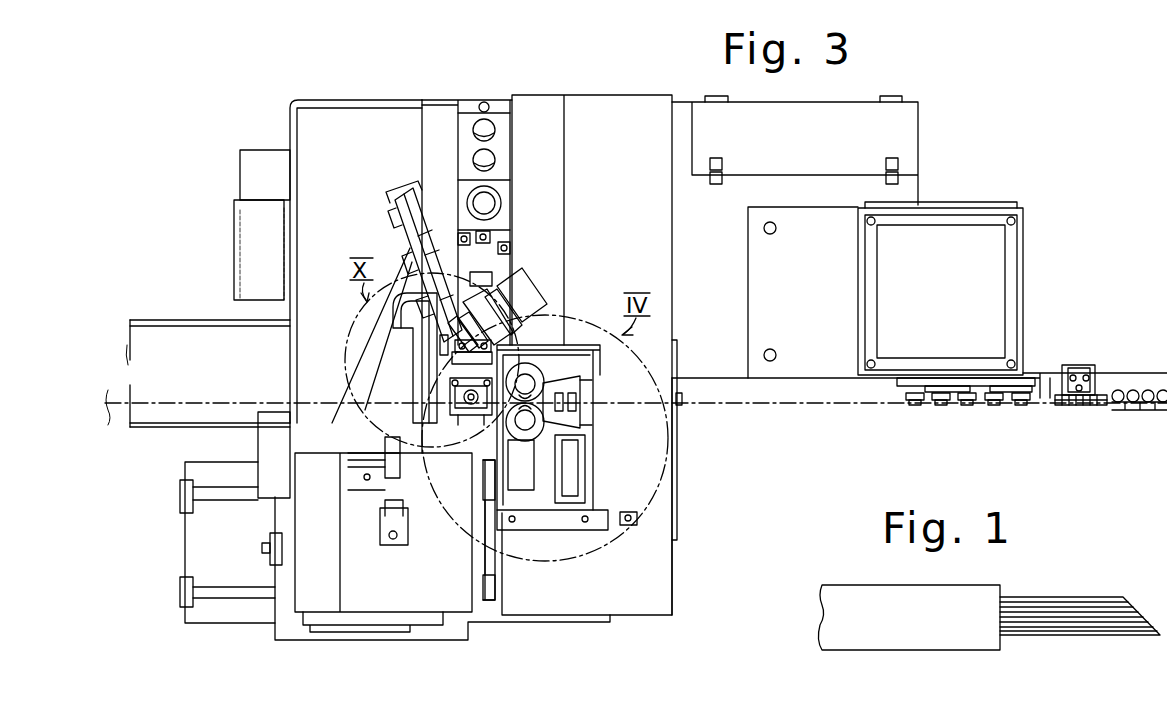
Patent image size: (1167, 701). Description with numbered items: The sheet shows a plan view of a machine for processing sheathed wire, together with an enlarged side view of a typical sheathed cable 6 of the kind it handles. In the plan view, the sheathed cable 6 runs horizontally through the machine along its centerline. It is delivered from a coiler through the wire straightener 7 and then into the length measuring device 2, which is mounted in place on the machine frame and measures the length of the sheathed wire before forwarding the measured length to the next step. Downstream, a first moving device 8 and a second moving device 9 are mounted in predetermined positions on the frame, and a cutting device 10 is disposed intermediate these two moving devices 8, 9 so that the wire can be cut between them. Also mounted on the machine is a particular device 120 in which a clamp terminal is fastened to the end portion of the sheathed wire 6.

The length measuring device 2 is at (981, 408).
The sheathed cable 6 is at (229, 400).
The wire straightener 7 is at (1112, 410).
The first moving device 8 is at (590, 342).
The second moving device 9 is at (405, 356).
The cutting device 10 is at (452, 430).
The clamp terminal fastening device 120 is at (495, 540).